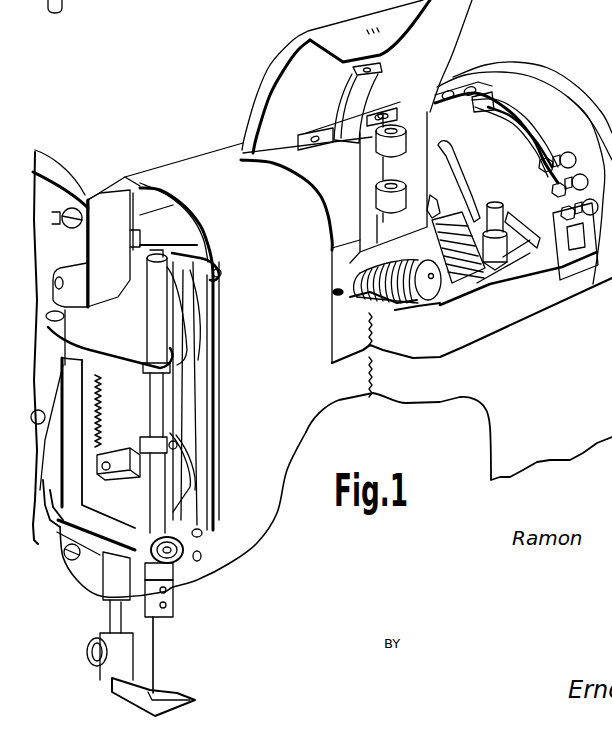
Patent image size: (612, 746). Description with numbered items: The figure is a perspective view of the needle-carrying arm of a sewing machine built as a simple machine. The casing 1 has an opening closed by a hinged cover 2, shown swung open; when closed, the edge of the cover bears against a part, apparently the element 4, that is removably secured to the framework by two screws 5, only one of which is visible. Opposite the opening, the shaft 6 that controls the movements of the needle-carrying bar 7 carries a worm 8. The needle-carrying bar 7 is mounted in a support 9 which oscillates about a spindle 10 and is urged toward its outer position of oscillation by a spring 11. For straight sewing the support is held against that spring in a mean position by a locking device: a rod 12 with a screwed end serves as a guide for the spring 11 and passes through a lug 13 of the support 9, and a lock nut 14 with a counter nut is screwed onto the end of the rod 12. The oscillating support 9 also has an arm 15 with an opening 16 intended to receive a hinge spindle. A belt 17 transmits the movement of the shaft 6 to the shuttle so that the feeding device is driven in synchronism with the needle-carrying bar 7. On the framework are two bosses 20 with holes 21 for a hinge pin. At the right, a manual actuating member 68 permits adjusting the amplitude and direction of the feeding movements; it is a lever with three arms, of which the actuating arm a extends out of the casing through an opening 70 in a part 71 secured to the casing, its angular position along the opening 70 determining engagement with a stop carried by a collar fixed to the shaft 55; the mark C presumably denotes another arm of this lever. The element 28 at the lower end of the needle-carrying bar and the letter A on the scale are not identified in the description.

The casing 1 is at (262, 176).
The hinged cover 2 is at (272, 62).
The base plate of zigzag mechanism 4 is at (472, 320).
The screws 5 is at (333, 293).
The shaft 6 is at (440, 304).
The needle-carrying bar 7 is at (148, 425).
The worm 8 is at (398, 310).
The support 9 is at (112, 355).
The spindle 10 is at (96, 257).
The spring 11 is at (202, 535).
The rod 12 is at (201, 554).
The lug 13 is at (177, 521).
The lock nut 14 is at (155, 550).
The arm 15 is at (58, 347).
The opening 16 is at (52, 312).
The belt 17 is at (437, 204).
The bosses 20 is at (376, 142).
The holes 21 is at (410, 120).
The needle 28 is at (166, 647).
The shaft 55 is at (490, 200).
The manual actuating member 68 is at (516, 210).
The opening 70 is at (500, 107).
The part 71 is at (575, 241).
The scale mark A is at (550, 228).
The arm c of the actuating lever C is at (452, 172).
The actuating arm a is at (568, 186).